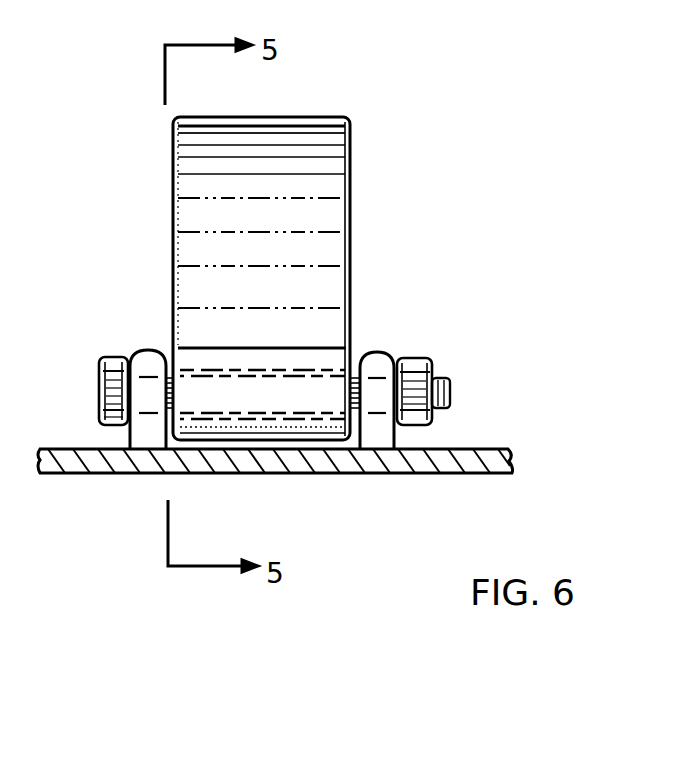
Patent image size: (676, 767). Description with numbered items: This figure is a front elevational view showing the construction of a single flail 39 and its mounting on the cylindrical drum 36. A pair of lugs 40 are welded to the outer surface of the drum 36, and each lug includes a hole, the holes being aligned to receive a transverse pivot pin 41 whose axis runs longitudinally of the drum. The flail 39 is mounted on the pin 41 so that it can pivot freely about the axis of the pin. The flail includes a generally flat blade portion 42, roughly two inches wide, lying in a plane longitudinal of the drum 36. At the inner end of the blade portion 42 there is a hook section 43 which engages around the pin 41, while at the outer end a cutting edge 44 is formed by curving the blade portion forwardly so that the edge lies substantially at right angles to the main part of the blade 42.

The cylindrical drum 36 is at (466, 448).
The flail 39 is at (361, 230).
The lugs 40 is at (145, 366).
The transverse pivot pin 41 is at (451, 387).
The blade portion 42 is at (190, 210).
The hook section 43 is at (222, 346).
The cutting edge 44 is at (296, 130).